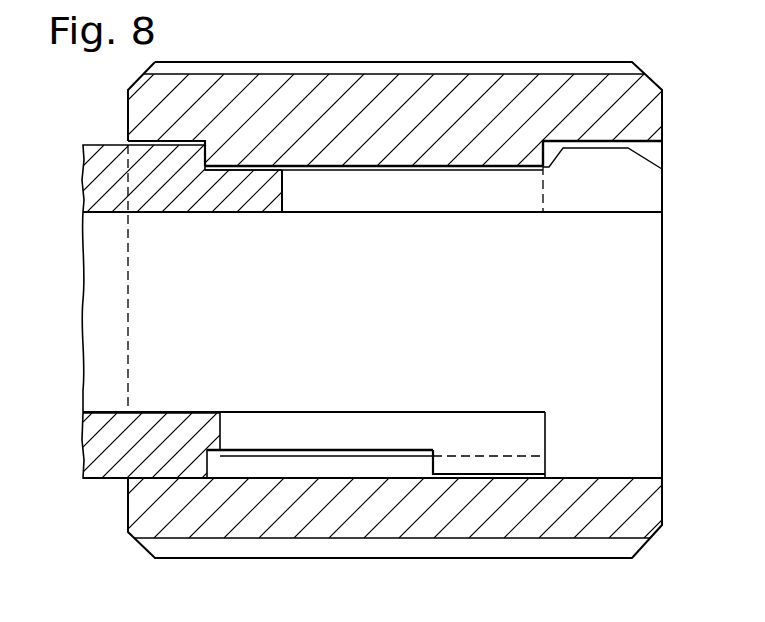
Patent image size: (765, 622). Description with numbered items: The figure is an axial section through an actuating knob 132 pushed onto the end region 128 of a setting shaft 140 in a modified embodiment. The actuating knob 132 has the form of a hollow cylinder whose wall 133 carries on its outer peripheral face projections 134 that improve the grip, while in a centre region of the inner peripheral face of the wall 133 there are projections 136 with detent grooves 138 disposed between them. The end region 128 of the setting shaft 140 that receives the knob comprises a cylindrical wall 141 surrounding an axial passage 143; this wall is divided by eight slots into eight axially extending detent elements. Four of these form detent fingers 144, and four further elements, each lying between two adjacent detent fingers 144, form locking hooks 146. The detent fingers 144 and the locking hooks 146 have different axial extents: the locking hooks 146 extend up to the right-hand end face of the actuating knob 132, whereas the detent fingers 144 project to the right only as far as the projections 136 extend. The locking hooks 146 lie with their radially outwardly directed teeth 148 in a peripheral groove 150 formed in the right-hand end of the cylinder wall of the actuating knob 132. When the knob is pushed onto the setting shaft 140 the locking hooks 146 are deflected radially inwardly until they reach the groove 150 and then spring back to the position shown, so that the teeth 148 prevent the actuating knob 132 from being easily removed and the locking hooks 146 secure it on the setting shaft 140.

The end region 128 is at (248, 166).
The actuating knob 132 is at (606, 57).
The wall 133 is at (188, 527).
The projections 134 is at (518, 68).
The projections 136 is at (313, 145).
The detent grooves 138 is at (228, 465).
The setting shaft 140 is at (113, 144).
The cylindrical wall 141 is at (103, 462).
The axial passage 143 is at (150, 320).
The detent fingers 144 is at (472, 448).
The locking hooks 146 is at (647, 198).
The teeth 148 is at (632, 158).
The groove 150 is at (637, 135).